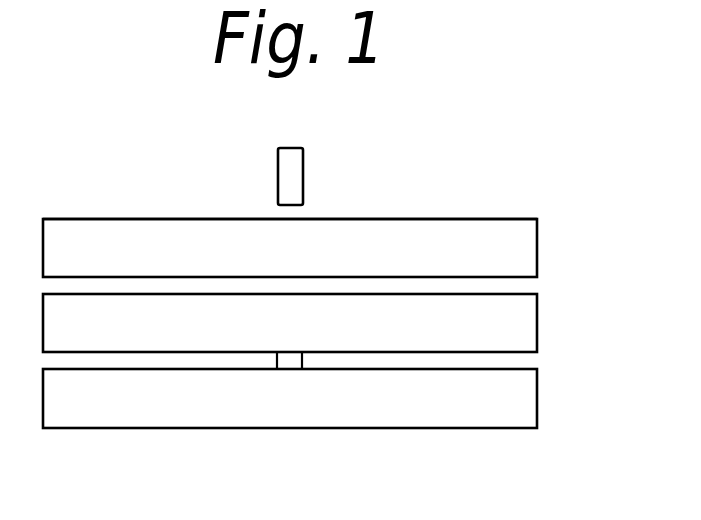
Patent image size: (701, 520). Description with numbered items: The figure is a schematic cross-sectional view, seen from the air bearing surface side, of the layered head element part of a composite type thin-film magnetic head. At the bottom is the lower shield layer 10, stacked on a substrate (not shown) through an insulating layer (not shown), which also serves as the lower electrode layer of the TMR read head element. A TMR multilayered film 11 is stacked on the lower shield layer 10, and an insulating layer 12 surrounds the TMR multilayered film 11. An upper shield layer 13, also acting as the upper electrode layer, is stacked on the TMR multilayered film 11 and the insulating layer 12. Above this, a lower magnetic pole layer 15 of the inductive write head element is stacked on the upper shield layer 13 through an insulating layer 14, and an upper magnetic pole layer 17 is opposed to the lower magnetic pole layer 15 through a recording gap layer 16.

The lower shield layer 10 is at (520, 406).
The TMR multilayered film 11 is at (290, 358).
The insulating layer 12 is at (520, 362).
The upper shield layer 13 is at (522, 328).
The insulating layer 14 is at (520, 286).
The lower magnetic pole layer 15 is at (520, 242).
The recording gap layer 16 is at (292, 214).
The upper magnetic pole layer 17 is at (293, 163).